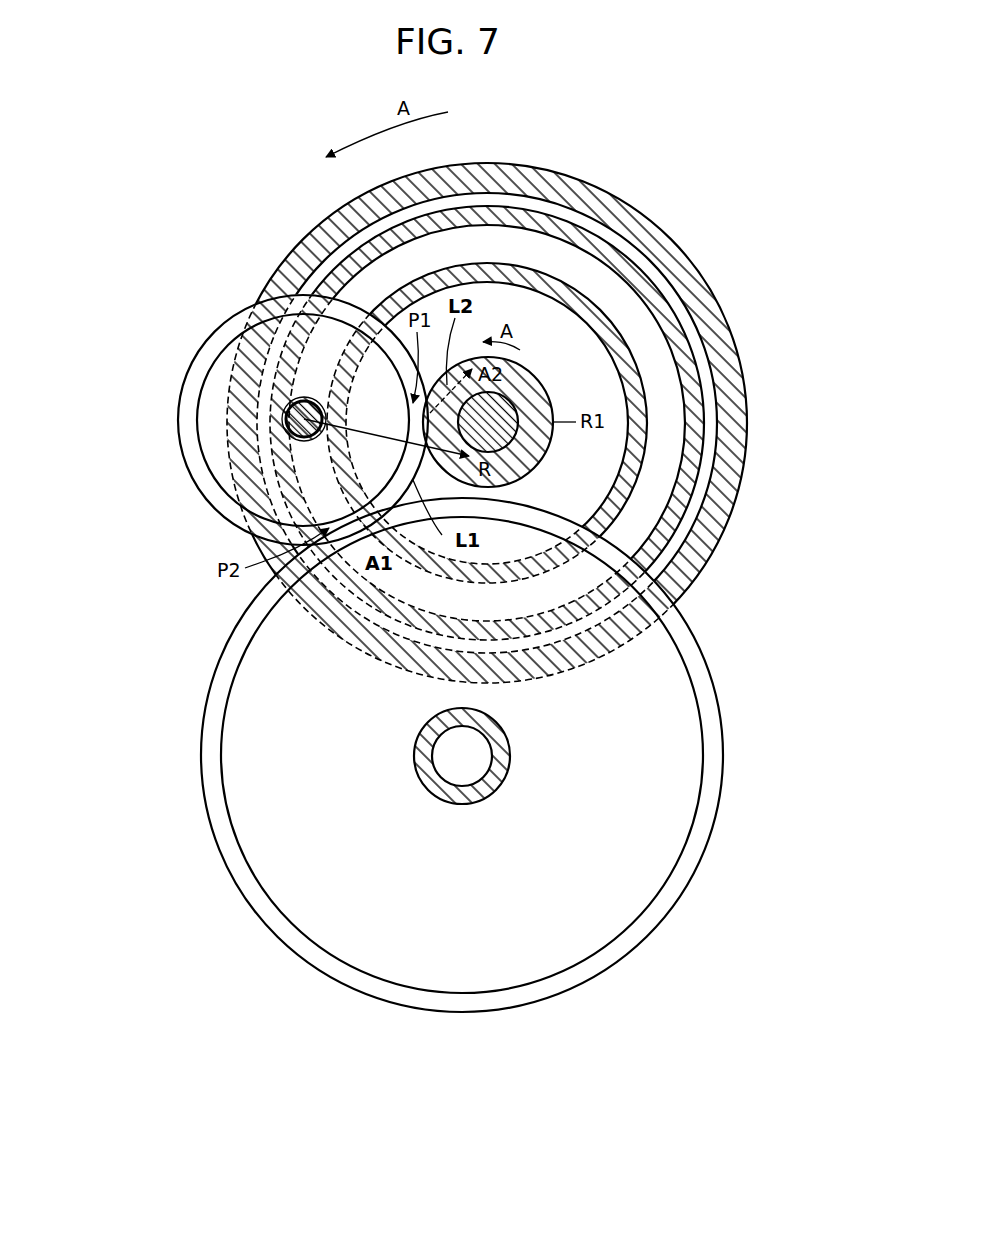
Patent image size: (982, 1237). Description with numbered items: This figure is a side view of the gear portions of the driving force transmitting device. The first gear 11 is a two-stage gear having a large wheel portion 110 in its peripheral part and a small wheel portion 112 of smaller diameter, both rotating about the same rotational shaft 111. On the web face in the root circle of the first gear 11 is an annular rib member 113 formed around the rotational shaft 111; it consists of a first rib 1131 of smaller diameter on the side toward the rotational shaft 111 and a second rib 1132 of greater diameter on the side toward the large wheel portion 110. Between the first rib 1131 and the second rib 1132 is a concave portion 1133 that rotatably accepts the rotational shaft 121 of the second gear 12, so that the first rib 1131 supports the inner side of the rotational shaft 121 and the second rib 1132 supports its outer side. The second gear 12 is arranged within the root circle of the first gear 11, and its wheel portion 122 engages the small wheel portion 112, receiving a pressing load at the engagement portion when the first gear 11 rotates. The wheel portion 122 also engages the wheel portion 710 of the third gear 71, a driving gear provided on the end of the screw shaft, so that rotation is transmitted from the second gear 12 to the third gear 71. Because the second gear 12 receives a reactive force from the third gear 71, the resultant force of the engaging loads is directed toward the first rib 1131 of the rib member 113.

The first gear 11 is at (529, 408).
The large wheel portion 110 is at (733, 391).
The rotational shaft 111 is at (535, 405).
The small wheel portion 112 is at (552, 388).
The rib member 113 is at (529, 423).
The first rib 1131 is at (645, 443).
The second rib 1132 is at (668, 387).
The concave portion 1133 is at (703, 363).
The second gear 12 is at (238, 419).
The rotational shaft 121 is at (270, 390).
The wheel portion 122 is at (197, 477).
The third gear 71 is at (496, 781).
The wheel portion 710 is at (492, 1000).